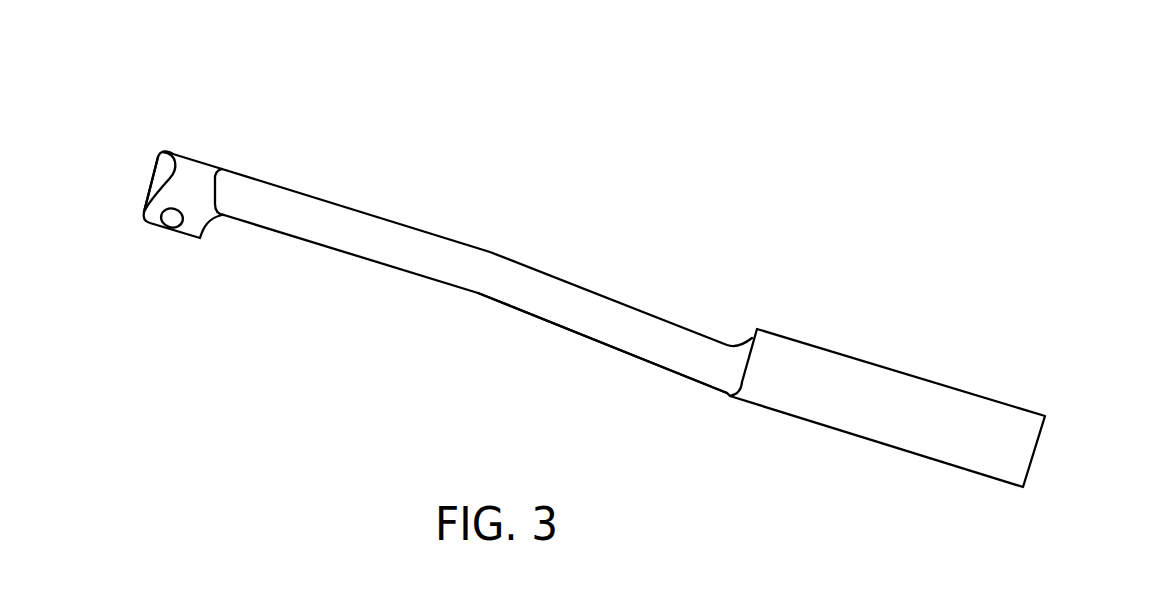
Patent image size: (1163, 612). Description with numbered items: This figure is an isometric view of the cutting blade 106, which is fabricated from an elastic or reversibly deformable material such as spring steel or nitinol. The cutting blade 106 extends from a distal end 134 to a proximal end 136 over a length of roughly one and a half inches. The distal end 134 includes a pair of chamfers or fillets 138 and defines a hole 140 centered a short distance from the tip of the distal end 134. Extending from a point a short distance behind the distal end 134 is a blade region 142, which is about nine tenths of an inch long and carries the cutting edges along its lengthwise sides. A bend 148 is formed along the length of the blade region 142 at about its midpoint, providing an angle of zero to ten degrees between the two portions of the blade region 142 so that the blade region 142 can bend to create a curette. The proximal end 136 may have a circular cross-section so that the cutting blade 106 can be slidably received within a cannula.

The cutting blade 106 is at (706, 175).
The distal end 134 is at (142, 130).
The proximal end 136 is at (1085, 380).
The chamfers or fillets 138 is at (162, 170).
The hole 140 is at (173, 218).
The blade region 142 is at (445, 190).
The bend 148 is at (476, 293).